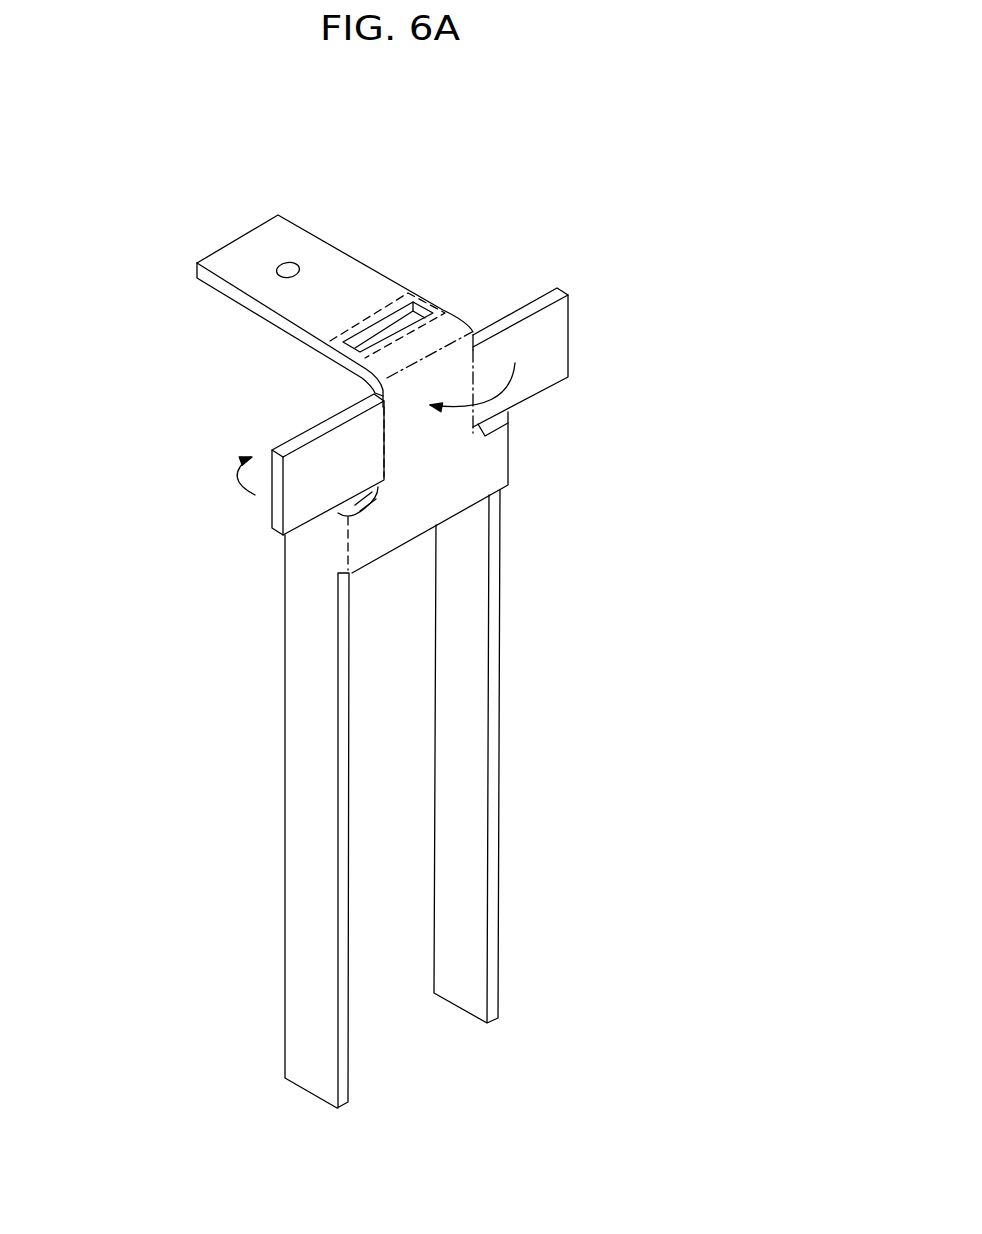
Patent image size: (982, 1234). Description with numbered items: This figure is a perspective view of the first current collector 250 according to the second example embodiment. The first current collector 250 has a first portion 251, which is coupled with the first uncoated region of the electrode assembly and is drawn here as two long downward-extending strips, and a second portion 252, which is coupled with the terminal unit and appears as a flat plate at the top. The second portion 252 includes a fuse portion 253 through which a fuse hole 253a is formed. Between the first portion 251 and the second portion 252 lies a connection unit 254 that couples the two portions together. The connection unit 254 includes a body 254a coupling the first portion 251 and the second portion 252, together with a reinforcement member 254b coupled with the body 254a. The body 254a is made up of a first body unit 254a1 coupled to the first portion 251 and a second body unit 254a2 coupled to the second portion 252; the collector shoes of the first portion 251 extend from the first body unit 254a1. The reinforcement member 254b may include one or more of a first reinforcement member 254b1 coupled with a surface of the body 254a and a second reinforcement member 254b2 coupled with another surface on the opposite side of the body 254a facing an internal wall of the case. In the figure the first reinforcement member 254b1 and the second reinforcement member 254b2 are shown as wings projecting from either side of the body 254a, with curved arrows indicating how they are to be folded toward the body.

The first current collector 250 is at (545, 240).
The first portion 251 is at (518, 737).
The second portion 252 is at (302, 243).
The fuse portion 253 is at (387, 322).
The fuse hole 253a is at (397, 323).
The connection unit 254 is at (703, 382).
The body 254a is at (132, 533).
The first body unit 254a1 is at (367, 535).
The second body unit 254a2 is at (413, 430).
The reinforcement member 254b is at (703, 465).
The first reinforcement member 254b1 is at (553, 355).
The second reinforcement member 254b2 is at (338, 442).